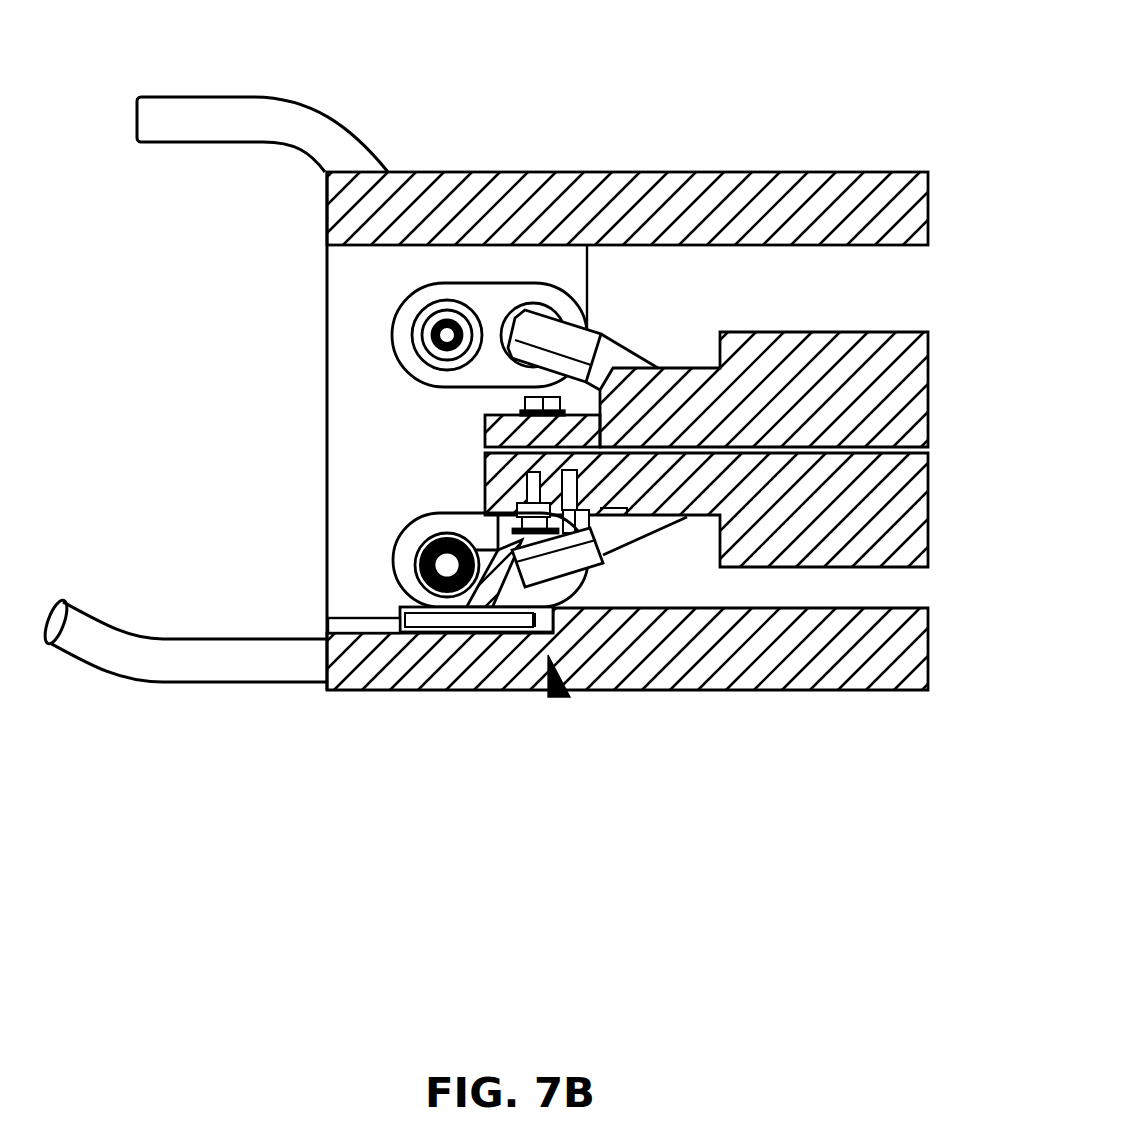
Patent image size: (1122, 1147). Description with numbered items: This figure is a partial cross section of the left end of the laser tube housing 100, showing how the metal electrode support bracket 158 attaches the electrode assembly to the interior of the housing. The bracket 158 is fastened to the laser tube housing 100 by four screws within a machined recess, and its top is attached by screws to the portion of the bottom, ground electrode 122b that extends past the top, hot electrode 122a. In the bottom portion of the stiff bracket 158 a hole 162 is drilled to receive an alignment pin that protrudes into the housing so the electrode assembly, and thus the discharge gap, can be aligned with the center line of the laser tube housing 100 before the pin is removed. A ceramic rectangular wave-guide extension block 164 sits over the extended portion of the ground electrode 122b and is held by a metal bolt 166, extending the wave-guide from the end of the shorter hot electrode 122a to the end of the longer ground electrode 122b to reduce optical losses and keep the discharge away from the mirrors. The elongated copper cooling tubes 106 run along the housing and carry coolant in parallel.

The laser tube housing 100 is at (542, 188).
The copper cooling tubes 106 is at (242, 108).
The hot electrode 122a is at (797, 372).
The ground electrode 122b is at (820, 543).
The electrode support bracket 158 is at (553, 697).
The hole 162 is at (433, 620).
The ceramic rectangular wave-guide extension block 164 is at (483, 432).
The metal bolt 166 is at (450, 405).